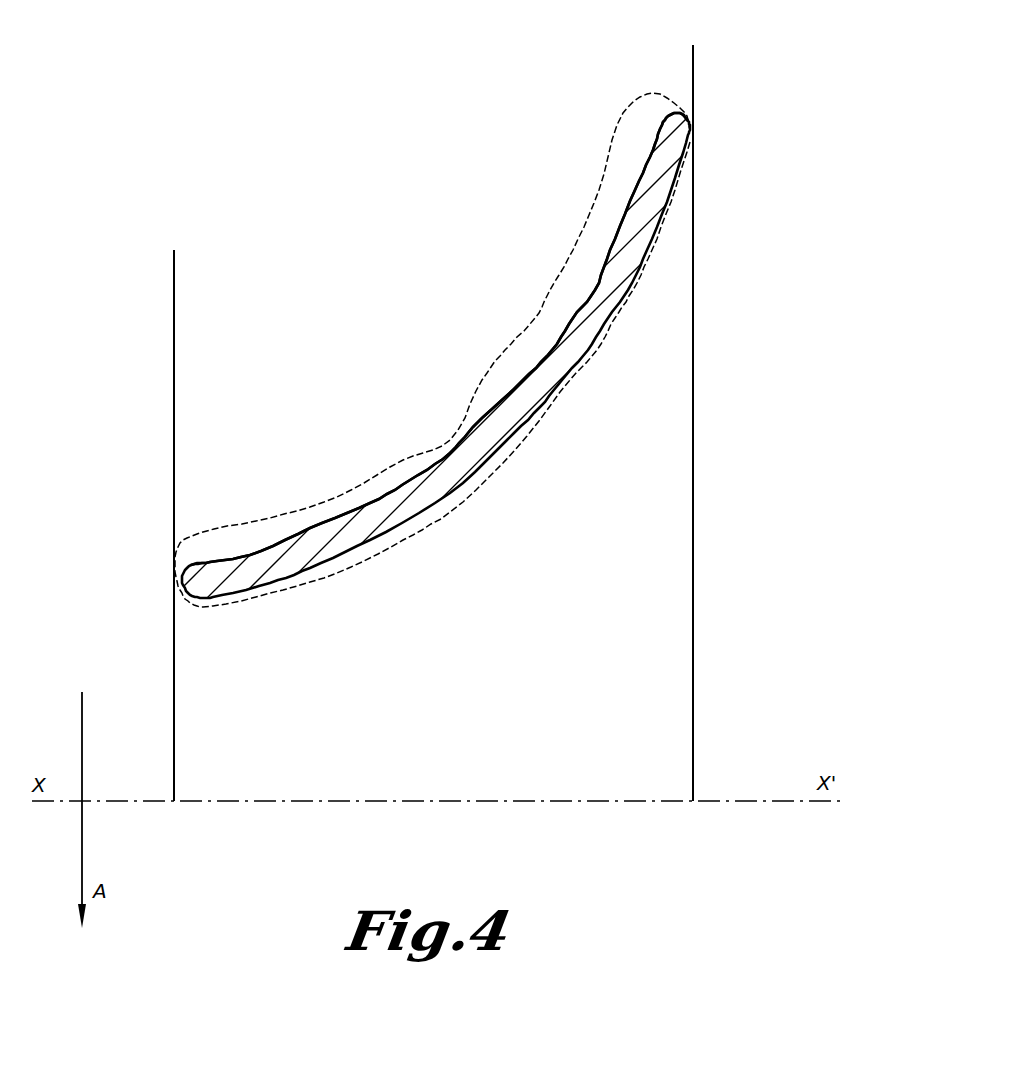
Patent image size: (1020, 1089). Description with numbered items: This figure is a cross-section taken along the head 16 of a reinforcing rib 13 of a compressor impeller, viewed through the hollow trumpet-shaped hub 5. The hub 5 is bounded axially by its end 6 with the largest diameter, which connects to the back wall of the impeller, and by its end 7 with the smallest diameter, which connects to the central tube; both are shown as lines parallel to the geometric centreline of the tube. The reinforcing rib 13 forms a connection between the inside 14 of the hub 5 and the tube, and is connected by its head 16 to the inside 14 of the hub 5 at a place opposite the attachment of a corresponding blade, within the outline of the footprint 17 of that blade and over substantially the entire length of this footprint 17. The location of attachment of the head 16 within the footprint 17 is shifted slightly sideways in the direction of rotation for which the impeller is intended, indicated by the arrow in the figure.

The hub 5 is at (593, 723).
The end with the largest diameter 6 is at (693, 212).
The end with the smallest diameter 7 is at (174, 433).
The reinforcing rib 13 is at (523, 413).
The inside of the hub 14 is at (530, 603).
The head of the reinforcing rib 16 is at (577, 321).
The footprint of the blade 17 is at (478, 380).